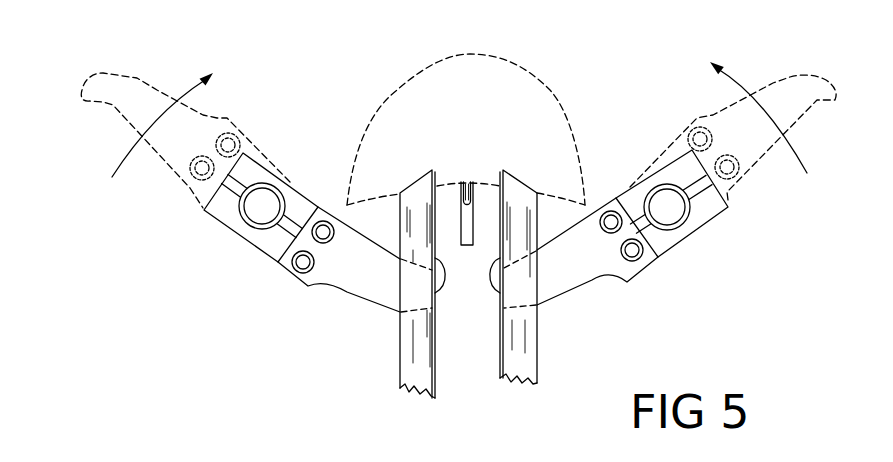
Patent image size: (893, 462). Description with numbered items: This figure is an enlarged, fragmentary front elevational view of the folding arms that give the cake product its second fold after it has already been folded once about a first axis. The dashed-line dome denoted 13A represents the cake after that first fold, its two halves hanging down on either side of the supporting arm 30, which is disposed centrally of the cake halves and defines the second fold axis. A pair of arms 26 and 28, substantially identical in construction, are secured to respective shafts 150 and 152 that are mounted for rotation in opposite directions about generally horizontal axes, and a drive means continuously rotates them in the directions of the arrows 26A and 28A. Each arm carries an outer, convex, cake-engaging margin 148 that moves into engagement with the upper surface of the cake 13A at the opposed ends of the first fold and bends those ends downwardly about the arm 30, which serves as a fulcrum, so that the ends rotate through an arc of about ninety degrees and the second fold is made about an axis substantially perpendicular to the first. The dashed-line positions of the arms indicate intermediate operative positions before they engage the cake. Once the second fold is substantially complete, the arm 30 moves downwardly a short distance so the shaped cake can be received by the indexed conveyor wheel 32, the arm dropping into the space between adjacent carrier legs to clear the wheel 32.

The once-folded cake 13A is at (557, 101).
The arm 26 is at (346, 293).
The arrow 26A is at (120, 162).
The arm 28 is at (602, 285).
The arrow 28A is at (800, 150).
The supporting arm 30 is at (469, 192).
The conveyor wheel 32 is at (392, 380).
The cake-engaging margin 148 is at (497, 278).
The shaft 150 is at (262, 204).
The shaft 152 is at (666, 207).